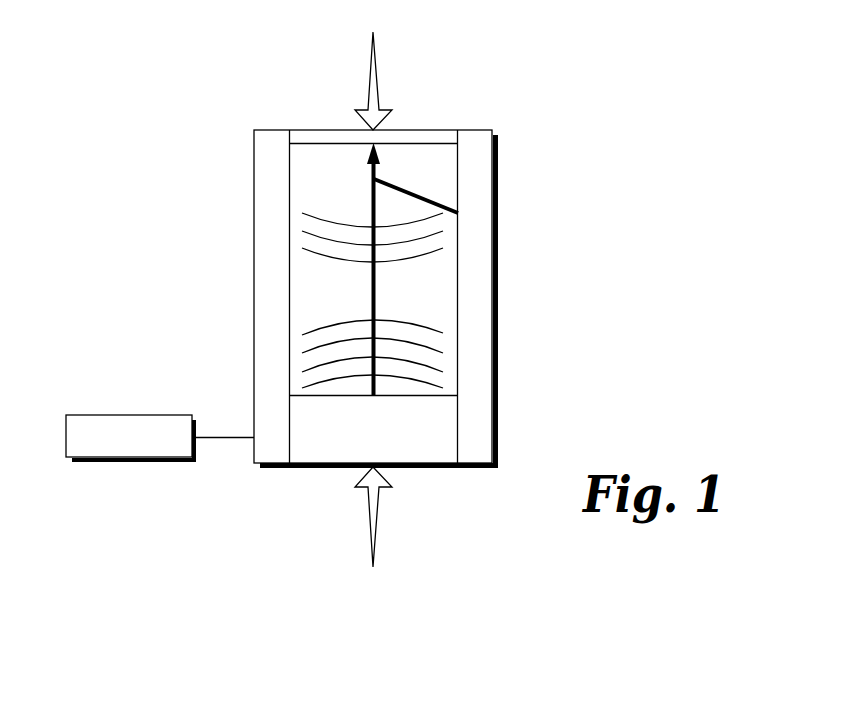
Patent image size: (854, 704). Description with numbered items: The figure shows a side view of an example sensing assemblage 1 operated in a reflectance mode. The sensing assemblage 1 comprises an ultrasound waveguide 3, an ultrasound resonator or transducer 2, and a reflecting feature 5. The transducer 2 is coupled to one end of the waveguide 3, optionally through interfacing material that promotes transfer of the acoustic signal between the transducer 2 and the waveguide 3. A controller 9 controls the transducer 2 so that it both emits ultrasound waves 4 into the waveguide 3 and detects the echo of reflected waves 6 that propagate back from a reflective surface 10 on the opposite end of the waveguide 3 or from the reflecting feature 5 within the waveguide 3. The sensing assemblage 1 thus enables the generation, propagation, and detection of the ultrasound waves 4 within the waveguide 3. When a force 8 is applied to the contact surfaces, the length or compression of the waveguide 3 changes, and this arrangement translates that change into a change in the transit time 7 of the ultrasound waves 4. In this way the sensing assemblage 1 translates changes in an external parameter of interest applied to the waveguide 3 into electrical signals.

The sensing assemblage 1 is at (242, 124).
The transducer 2 is at (327, 452).
The ultrasound waveguide 3 is at (303, 187).
The ultrasound waves 4 is at (433, 331).
The reflecting feature 5 is at (428, 195).
The reflected waves 6 is at (433, 252).
The transit time 7 is at (372, 305).
The force 8 is at (367, 98).
The controller 9 is at (158, 415).
The reflective surface 10 is at (435, 138).